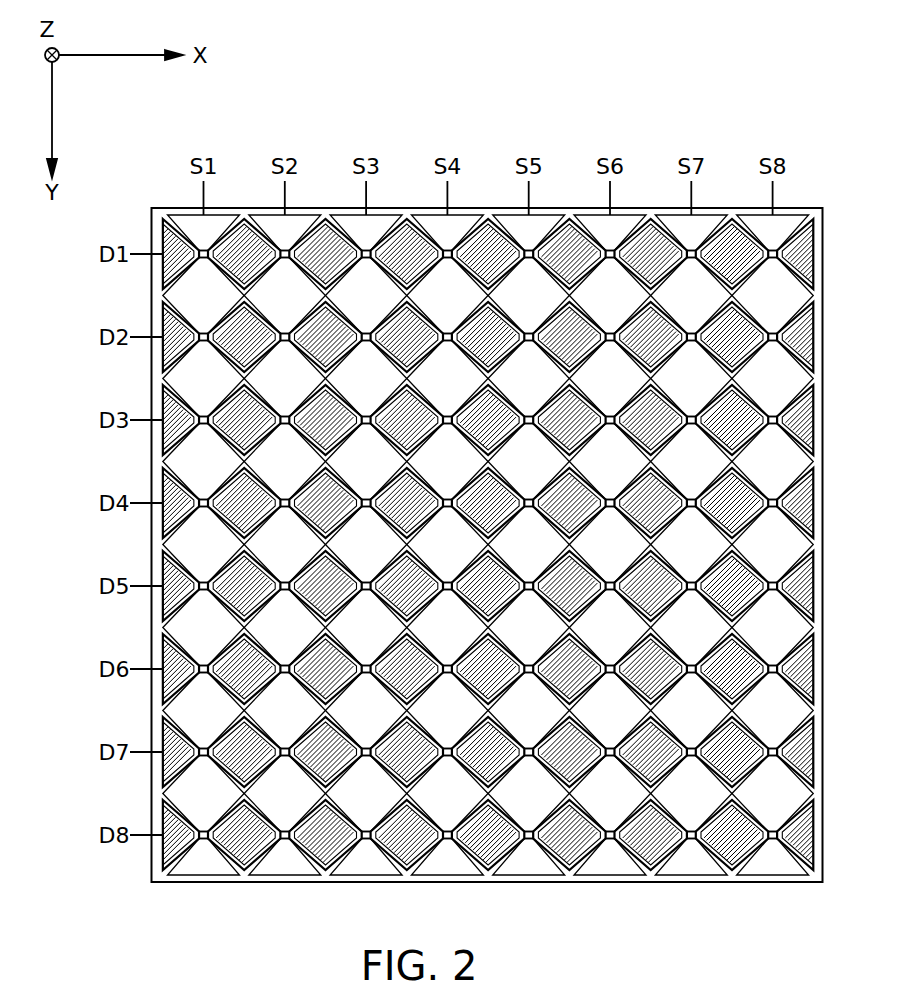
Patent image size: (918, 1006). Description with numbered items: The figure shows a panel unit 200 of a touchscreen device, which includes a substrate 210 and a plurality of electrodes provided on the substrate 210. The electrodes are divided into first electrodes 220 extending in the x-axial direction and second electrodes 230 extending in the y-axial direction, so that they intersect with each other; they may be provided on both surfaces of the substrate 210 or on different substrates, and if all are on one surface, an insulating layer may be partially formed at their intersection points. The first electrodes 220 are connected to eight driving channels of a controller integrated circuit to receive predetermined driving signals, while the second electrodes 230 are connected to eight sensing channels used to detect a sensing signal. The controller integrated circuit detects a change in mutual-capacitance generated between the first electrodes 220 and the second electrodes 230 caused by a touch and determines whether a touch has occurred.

The panel unit 200 is at (426, 441).
The substrate 210 is at (155, 208).
The first electrodes 220 is at (163, 271).
The second electrodes 230 is at (217, 220).